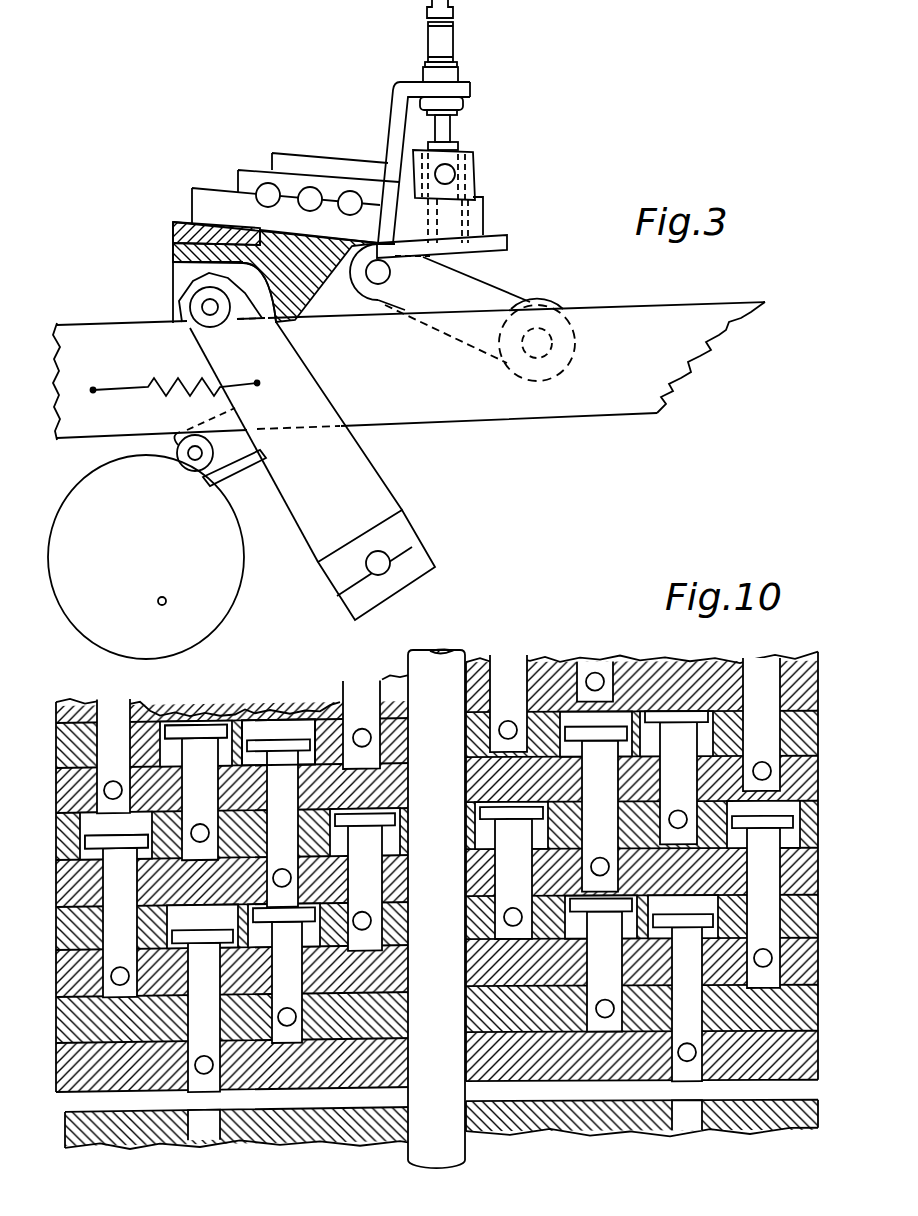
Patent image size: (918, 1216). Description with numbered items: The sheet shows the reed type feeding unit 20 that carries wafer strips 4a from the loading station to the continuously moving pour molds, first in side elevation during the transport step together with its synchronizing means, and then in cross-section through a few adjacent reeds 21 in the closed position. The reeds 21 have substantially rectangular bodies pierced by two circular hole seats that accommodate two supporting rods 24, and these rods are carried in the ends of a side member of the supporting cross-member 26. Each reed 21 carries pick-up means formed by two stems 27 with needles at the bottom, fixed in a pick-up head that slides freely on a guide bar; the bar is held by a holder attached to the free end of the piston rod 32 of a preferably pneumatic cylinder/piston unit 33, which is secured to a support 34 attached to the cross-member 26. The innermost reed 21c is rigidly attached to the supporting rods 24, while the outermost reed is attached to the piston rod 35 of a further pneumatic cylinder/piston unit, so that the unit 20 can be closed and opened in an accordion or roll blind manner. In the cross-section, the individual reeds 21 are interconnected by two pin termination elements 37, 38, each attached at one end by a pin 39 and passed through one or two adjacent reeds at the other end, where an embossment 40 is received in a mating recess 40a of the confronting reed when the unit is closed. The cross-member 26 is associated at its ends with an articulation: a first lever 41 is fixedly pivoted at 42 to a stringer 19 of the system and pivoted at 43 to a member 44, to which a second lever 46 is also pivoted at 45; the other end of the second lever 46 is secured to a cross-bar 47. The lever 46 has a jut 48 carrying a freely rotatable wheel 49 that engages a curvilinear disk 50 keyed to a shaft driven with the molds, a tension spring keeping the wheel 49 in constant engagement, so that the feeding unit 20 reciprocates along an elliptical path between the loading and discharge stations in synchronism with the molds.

In FIG. 3, the stringer 19 is at (700, 317).
In FIG. 3, the supporting rods 24 is at (352, 191).
In FIG. 10, the supporting rods 24 is at (418, 1148).
In FIG. 3, the supporting cross-member 26 is at (175, 228).
In FIG. 3, the stems 27 is at (475, 212).
In FIG. 3, the piston rod 32 is at (448, 126).
In FIG. 3, the cylinder/piston unit 33 is at (463, 52).
In FIG. 3, the support 34 is at (394, 107).
In FIG. 3, the piston rod 35 is at (308, 187).
In FIG. 3, the wafer strips 4a is at (507, 238).
In FIG. 3, the first lever 41 is at (490, 300).
In FIG. 3, the pivot 42 is at (558, 337).
In FIG. 3, the pivot 43 is at (380, 285).
In FIG. 3, the member 44 is at (307, 323).
In FIG. 3, the pivot 45 is at (190, 298).
In FIG. 3, the second lever 46 is at (355, 486).
In FIG. 3, the cross-bar 47 is at (390, 565).
In FIG. 3, the jut 48 is at (250, 455).
In FIG. 3, the wheel 49 is at (187, 431).
In FIG. 3, the curvilinear disk 50 is at (72, 522).
In FIG. 10, the feeding unit 20 is at (570, 650).
In FIG. 10, the reeds 21 is at (530, 657).
In FIG. 10, the innermost reed 21c is at (723, 1047).
In FIG. 10, the pin termination element 37 is at (298, 816).
In FIG. 10, the pin termination element 38 is at (213, 803).
In FIG. 10, the pin 39 is at (118, 967).
In FIG. 10, the embossment 40 is at (197, 728).
In FIG. 10, the recess 40a is at (231, 717).